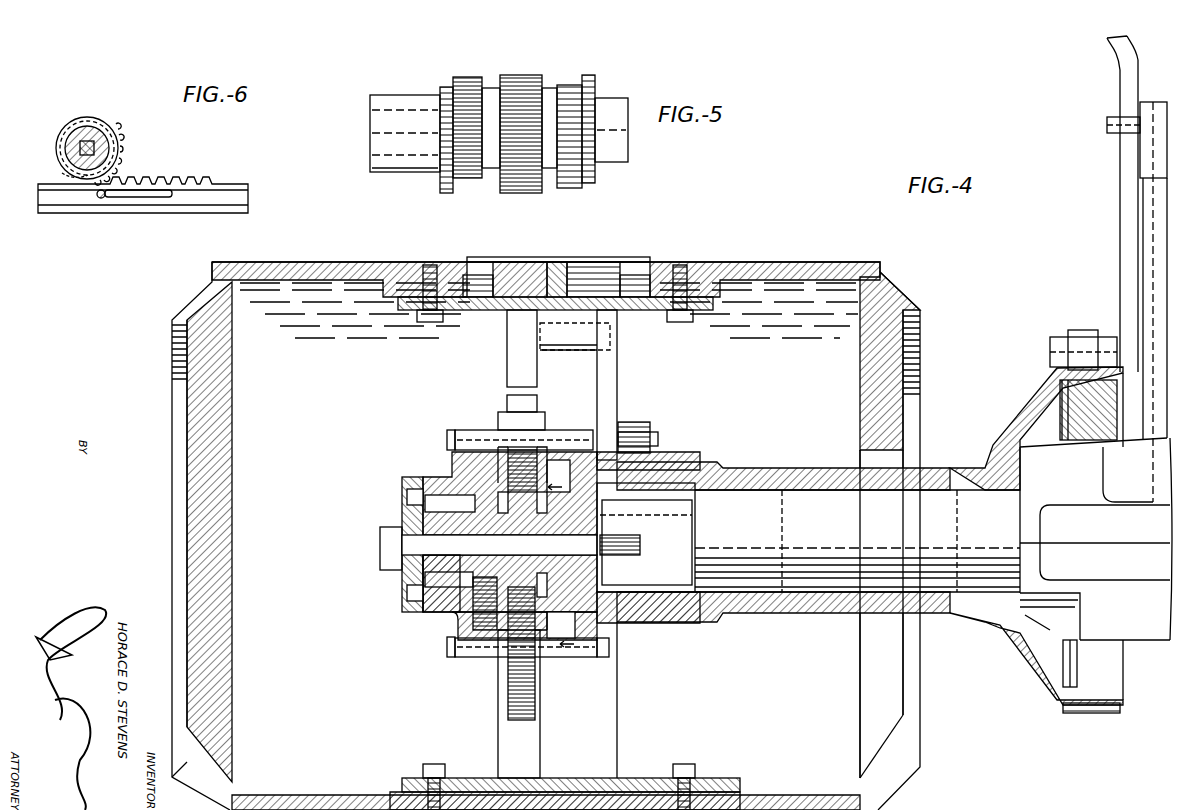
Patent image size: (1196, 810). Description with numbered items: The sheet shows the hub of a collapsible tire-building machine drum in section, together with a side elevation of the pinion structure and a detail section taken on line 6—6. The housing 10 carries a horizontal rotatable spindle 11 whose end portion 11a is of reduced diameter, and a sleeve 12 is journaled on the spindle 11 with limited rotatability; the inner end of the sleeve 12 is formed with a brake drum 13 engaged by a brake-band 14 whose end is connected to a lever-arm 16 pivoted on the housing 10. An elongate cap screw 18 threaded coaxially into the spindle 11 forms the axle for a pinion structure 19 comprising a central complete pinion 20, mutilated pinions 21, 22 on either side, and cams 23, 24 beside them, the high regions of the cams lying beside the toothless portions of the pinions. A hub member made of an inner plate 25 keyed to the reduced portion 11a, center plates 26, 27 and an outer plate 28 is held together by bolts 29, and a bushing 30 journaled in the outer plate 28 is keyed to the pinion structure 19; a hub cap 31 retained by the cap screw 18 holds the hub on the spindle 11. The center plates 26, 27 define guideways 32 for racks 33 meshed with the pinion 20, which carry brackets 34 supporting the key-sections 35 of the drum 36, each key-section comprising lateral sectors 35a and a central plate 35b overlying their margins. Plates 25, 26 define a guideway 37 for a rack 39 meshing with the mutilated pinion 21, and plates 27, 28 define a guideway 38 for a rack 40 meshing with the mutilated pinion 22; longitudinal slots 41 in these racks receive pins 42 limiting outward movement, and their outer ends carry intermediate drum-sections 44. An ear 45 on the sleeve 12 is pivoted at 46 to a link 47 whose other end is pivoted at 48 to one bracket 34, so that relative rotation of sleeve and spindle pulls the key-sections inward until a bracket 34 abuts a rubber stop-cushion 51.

In FIG. 4, the section line 6— 6 is at (561, 558).
In FIG. 4, the housing 10 is at (1147, 625).
In FIG. 4, the spindle 11 is at (964, 585).
In FIG. 4, the end portion of reduced diameter 11a is at (650, 570).
In FIG. 4, the sleeve 12 is at (793, 474).
In FIG. 4, the brake drum 13 is at (1078, 695).
In FIG. 4, the brake-band 14 is at (1090, 713).
In FIG. 4, the lever-arm 16 is at (1122, 207).
In FIG. 6, the cap screw 18 is at (80, 150).
In FIG. 4, the cap screw 18 is at (380, 541).
In FIG. 6, the pinion structure 19 is at (107, 143).
In FIG. 5, the pinion structure 19 is at (392, 178).
In FIG. 4, the pinion structure 19 is at (418, 525).
In FIG. 5, the complete pinion 20 is at (512, 193).
In FIG. 4, the complete pinion 20 is at (522, 480).
In FIG. 6, the mutilated pinion 21 is at (114, 121).
In FIG. 5, the mutilated pinion 21 is at (570, 188).
In FIG. 4, the mutilated pinion 21 is at (560, 485).
In FIG. 5, the mutilated pinion 22 is at (462, 178).
In FIG. 4, the mutilated pinion 22 is at (485, 603).
In FIG. 6, the cam 23 is at (68, 126).
In FIG. 5, the cam 23 is at (590, 98).
In FIG. 5, the cam 24 is at (446, 193).
In FIG. 4, the inner plate 25 is at (648, 537).
In FIG. 4, the center plate 26 is at (530, 640).
In FIG. 4, the center plate 27 is at (490, 657).
In FIG. 4, the outer plate 28 is at (456, 620).
In FIG. 4, the bolts 29 is at (447, 438).
In FIG. 4, the bushing 30 is at (425, 583).
In FIG. 4, the hub cap 31 is at (402, 482).
In FIG. 4, the guideways 32 is at (505, 445).
In FIG. 4, the racks 33 is at (537, 382).
In FIG. 4, the brackets 34 is at (490, 310).
In FIG. 4, the key-sections 35 is at (405, 272).
In FIG. 4, the lateral sectors 35a is at (295, 268).
In FIG. 4, the central plate 35b is at (610, 262).
In FIG. 4, the tire-building drum 36 is at (170, 380).
In FIG. 4, the guideway 37 is at (604, 657).
In FIG. 4, the guideway 38 is at (465, 477).
In FIG. 6, the rack 39 is at (218, 180).
In FIG. 4, the rack 39 is at (540, 650).
In FIG. 4, the rack 40 is at (480, 438).
In FIG. 6, the longitudinal slots 41 is at (165, 197).
In FIG. 6, the pins 42 is at (101, 200).
In FIG. 4, the intermediate drum-sections 44 is at (173, 512).
In FIG. 6, the ear 45 is at (91, 180).
In FIG. 4, the ear 45 is at (645, 422).
In FIG. 4, the pivot 46 is at (658, 438).
In FIG. 4, the link 47 is at (620, 382).
In FIG. 4, the pivot 48 is at (565, 337).
In FIG. 4, the stop-cushion 51 is at (527, 405).